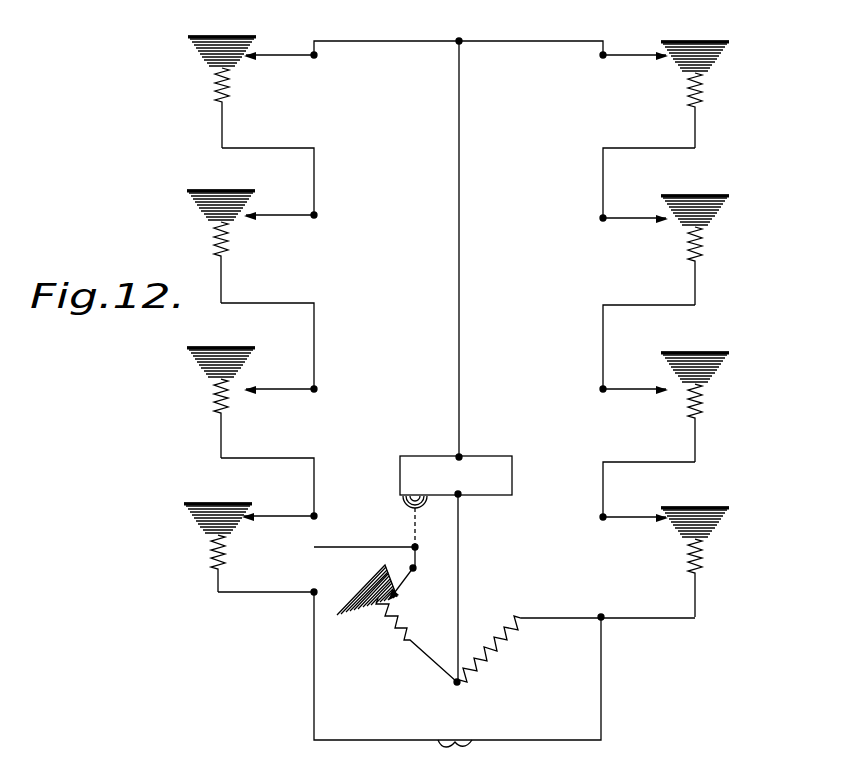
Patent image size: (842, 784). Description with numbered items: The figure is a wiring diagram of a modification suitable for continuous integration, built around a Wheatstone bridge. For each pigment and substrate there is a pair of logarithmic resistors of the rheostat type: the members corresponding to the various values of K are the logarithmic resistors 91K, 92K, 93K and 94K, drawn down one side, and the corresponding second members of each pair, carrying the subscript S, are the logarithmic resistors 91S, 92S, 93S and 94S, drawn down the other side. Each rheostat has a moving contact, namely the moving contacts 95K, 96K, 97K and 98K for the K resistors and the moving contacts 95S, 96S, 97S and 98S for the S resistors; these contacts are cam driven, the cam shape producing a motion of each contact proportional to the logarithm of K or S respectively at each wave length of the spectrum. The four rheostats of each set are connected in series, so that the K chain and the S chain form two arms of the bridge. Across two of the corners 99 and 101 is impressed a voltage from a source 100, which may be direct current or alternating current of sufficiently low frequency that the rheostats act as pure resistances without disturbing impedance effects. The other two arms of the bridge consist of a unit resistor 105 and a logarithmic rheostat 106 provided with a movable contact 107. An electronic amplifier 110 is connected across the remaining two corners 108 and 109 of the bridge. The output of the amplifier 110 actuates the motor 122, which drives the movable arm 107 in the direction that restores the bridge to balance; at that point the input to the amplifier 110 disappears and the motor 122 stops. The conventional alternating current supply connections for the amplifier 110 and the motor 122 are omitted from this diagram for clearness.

The logarithmic resistor 91K is at (212, 58).
The logarithmic resistor 92K is at (214, 220).
The logarithmic resistor 93K is at (210, 386).
The logarithmic resistor 94K is at (212, 548).
The moving contact 95K is at (297, 57).
The moving contact 96K is at (290, 218).
The moving contact 97K is at (301, 391).
The moving contact 98K is at (277, 518).
The logarithmic resistor 91S is at (720, 64).
The logarithmic resistor 92S is at (712, 222).
The logarithmic resistor 93S is at (712, 374).
The logarithmic resistor 94S is at (706, 542).
The moving contact 95S is at (643, 58).
The moving contact 96S is at (636, 221).
The moving contact 97S is at (657, 392).
The moving contact 98S is at (644, 520).
The corner 99 is at (310, 597).
The source 100 is at (456, 749).
The corner 101 is at (604, 620).
The unit resistor 105 is at (507, 634).
The logarithmic rheostat 106 is at (390, 628).
The movable contact 107 is at (399, 585).
The corner 108 is at (459, 40).
The corner 109 is at (458, 685).
The electronic amplifier 110 is at (490, 455).
The motor 122 is at (405, 504).